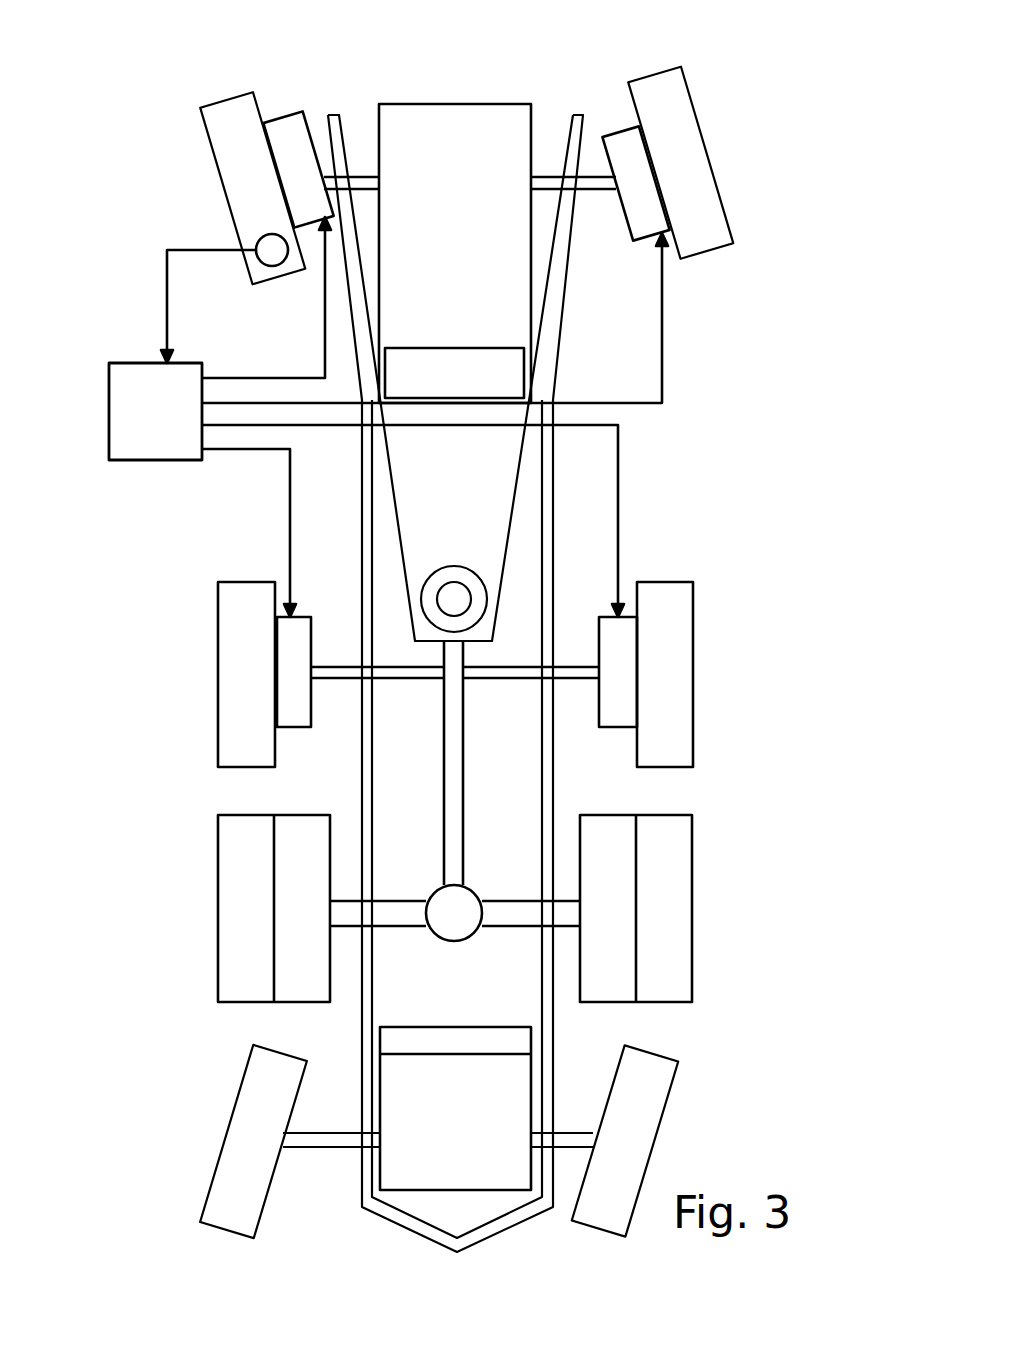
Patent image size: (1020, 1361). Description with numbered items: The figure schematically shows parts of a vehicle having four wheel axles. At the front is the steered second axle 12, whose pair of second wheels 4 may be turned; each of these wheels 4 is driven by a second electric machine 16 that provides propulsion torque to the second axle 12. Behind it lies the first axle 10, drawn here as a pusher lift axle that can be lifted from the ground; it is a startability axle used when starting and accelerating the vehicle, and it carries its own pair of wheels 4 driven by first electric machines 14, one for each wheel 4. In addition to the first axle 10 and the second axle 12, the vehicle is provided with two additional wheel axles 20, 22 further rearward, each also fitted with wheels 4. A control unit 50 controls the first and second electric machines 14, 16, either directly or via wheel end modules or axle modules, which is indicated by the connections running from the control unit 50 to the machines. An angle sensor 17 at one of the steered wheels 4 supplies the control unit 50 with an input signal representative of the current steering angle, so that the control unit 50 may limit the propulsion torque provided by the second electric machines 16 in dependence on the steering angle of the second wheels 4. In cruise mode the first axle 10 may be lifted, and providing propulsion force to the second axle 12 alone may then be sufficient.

The wheel 4 is at (222, 193).
The first axle 10 is at (425, 682).
The second axle 12 is at (560, 180).
The first electric machine 14 is at (282, 700).
The second electric machine 16 is at (283, 112).
The angle sensor 17 is at (272, 268).
The additional wheel axle 20 is at (333, 1150).
The additional wheel axle 22 is at (413, 927).
The control unit 50 is at (170, 426).